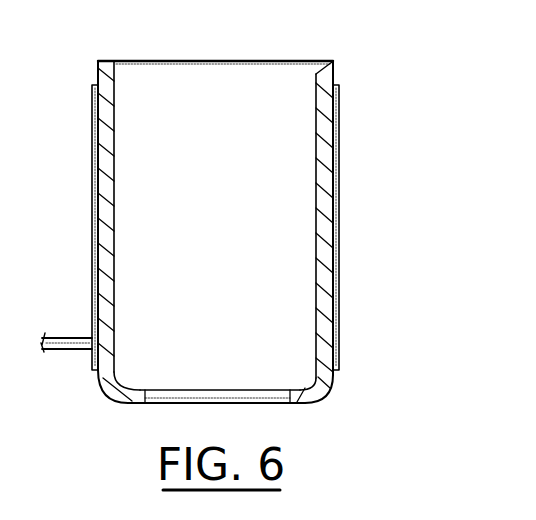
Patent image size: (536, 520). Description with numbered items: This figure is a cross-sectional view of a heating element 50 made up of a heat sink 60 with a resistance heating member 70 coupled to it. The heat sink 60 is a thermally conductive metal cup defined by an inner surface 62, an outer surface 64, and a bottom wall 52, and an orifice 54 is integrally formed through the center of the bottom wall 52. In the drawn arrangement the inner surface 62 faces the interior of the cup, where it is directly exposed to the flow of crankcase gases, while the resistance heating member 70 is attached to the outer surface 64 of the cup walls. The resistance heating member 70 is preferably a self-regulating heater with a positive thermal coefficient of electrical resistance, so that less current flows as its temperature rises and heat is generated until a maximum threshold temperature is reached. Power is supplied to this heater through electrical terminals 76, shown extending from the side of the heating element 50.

The heating element 50 is at (351, 64).
The bottom wall 52 is at (133, 389).
The orifice 54 is at (163, 391).
The heat sink 60 is at (115, 66).
The inner surface 62 is at (115, 114).
The outer surface 64 is at (97, 78).
The resistance heating member 70 is at (340, 162).
The electrical terminals 76 is at (63, 337).